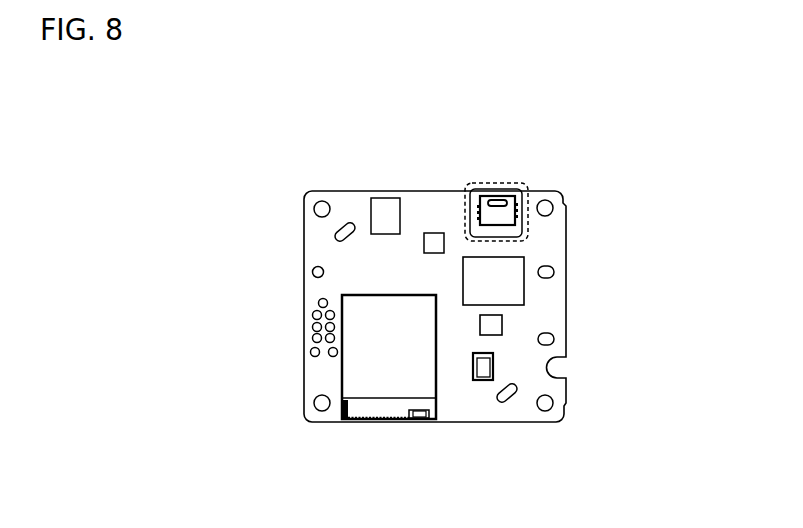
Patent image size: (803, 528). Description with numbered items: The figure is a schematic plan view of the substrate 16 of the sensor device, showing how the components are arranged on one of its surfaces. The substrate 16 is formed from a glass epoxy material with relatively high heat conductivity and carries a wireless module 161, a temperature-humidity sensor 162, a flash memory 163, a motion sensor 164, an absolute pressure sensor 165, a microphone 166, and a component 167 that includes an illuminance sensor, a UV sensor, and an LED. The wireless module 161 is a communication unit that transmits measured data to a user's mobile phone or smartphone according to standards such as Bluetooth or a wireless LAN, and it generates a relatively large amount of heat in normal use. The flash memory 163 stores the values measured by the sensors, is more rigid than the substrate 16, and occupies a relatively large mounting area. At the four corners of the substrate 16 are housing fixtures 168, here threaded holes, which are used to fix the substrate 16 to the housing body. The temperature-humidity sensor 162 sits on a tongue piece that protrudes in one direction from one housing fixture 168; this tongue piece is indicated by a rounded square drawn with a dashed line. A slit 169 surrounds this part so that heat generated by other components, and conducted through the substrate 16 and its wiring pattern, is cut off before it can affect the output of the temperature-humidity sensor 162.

The substrate 16 is at (643, 177).
The wireless module 161 is at (377, 373).
The temperature-humidity sensor 162 is at (495, 213).
The flash memory 163 is at (498, 288).
The motion sensor 164 is at (493, 325).
The absolute pressure sensor 165 is at (485, 367).
The microphone 166 is at (385, 205).
The component including an illuminance sensor, a UV sensor, and an LED 167 is at (435, 238).
The housing fixtures 168 is at (322, 209).
The slit 169 is at (520, 242).